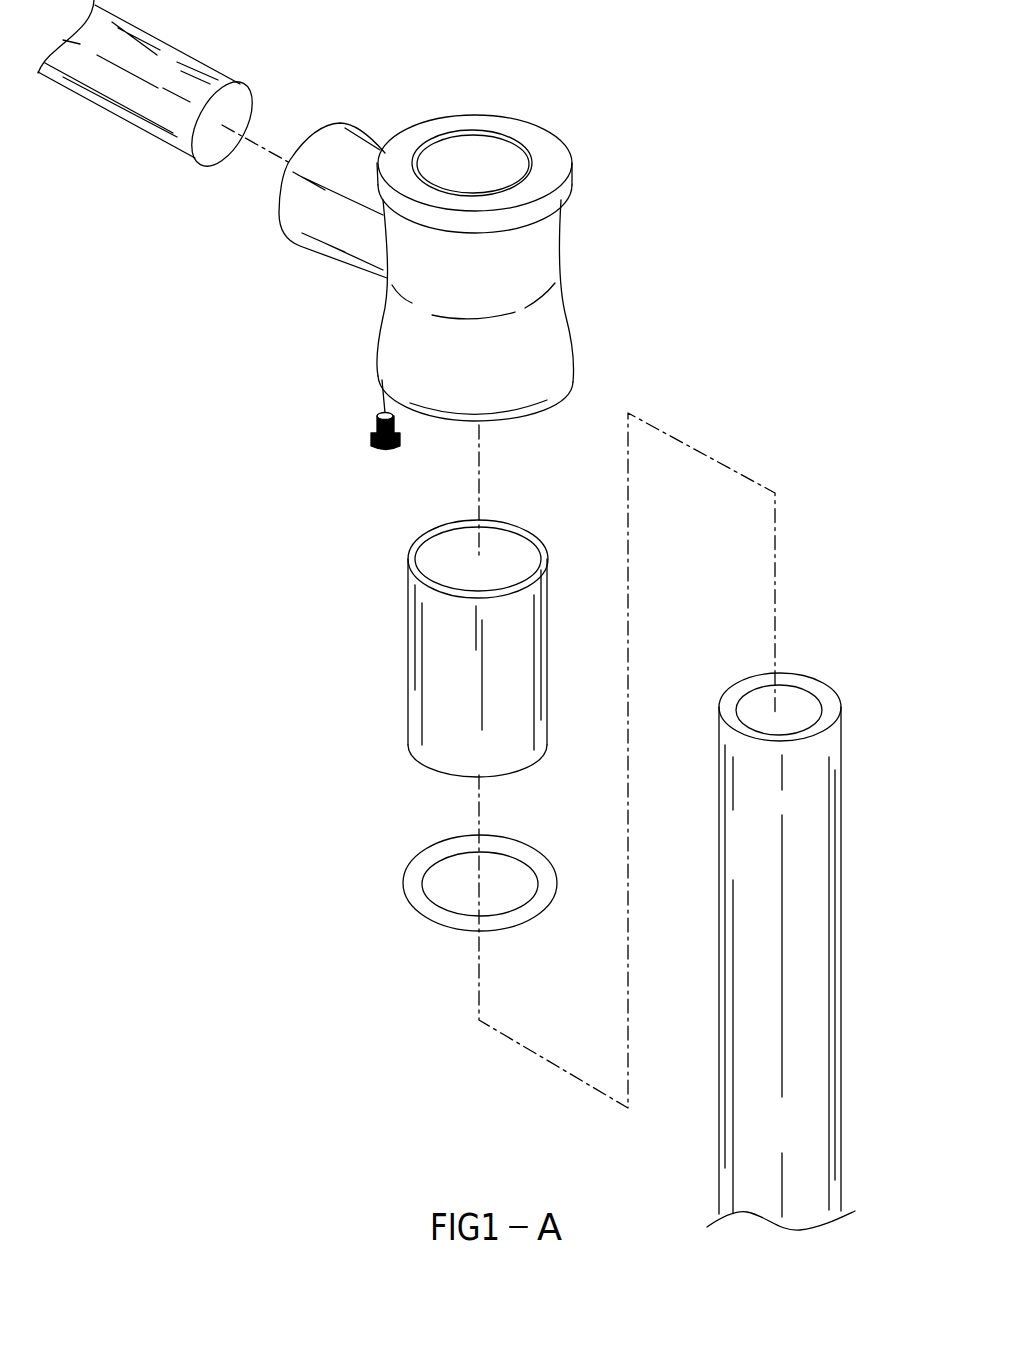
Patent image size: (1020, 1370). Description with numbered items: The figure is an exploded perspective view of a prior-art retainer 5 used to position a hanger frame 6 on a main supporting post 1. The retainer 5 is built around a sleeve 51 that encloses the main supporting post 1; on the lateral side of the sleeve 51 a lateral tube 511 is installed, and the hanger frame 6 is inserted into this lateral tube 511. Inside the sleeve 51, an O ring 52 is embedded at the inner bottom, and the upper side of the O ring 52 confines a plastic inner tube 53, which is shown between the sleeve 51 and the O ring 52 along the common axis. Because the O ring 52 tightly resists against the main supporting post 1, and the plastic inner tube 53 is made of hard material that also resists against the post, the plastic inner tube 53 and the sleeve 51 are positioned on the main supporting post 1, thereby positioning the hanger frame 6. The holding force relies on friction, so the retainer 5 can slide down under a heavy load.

The main supporting post 1 is at (812, 908).
The retainer 5 is at (373, 587).
The hanger frame 6 is at (150, 91).
The sleeve 51 is at (550, 348).
The lateral tube 511 is at (343, 164).
The O ring 52 is at (427, 907).
The plastic inner tube 53 is at (440, 680).